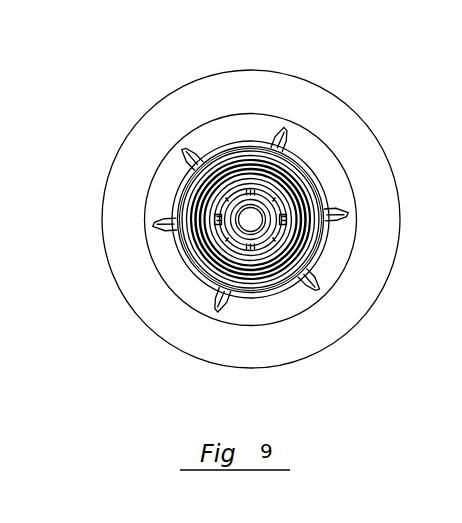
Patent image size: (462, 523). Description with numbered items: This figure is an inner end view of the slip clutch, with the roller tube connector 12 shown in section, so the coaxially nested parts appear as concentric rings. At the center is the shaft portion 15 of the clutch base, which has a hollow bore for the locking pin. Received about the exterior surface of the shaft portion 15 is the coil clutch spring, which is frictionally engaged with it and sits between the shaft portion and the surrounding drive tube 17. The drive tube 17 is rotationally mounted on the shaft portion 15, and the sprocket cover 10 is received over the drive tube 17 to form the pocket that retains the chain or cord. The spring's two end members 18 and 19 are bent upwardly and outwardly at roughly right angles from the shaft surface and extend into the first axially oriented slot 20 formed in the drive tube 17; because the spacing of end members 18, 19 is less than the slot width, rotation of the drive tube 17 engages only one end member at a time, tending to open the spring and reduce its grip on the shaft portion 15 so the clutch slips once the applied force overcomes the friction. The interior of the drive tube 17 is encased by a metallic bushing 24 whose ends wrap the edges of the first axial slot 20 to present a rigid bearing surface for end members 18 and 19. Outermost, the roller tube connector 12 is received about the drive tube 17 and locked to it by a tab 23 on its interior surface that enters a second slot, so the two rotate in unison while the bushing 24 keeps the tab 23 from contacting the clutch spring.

The sprocket cover 10 is at (216, 86).
The roller tube connector 12 is at (320, 190).
The shaft portion 15 is at (288, 293).
The drive tube 17 is at (213, 293).
The end member 18 is at (183, 242).
The end member 19 is at (217, 173).
The first axially oriented slot 20 is at (175, 232).
The tab 23 is at (313, 367).
The metallic bushing 24 is at (310, 170).